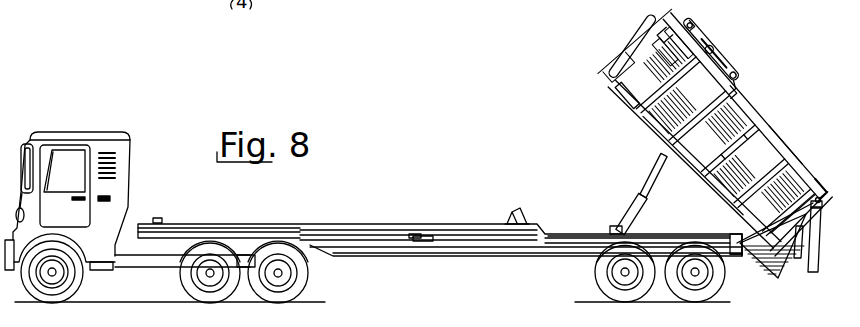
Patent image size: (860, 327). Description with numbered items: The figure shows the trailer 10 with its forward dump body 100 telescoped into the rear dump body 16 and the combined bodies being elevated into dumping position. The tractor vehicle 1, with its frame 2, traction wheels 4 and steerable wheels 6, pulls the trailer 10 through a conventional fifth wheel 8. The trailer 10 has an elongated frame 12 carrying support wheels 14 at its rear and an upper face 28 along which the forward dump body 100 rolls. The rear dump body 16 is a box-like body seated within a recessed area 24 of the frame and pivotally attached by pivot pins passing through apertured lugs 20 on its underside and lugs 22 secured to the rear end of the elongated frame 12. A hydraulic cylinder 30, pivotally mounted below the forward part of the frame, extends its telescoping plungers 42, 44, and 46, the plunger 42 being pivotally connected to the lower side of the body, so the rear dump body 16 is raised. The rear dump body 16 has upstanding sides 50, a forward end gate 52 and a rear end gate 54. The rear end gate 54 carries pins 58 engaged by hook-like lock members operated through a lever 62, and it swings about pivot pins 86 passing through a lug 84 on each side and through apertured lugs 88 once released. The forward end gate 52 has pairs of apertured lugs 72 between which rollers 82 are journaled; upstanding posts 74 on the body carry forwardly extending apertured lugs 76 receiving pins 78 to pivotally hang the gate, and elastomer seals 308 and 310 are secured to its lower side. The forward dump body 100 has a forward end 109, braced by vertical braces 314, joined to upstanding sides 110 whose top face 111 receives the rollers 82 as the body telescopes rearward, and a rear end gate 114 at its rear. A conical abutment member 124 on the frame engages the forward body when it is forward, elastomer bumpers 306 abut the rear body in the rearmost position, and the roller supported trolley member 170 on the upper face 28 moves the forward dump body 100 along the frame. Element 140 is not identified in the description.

The tractor vehicle 1 is at (133, 173).
The frame 2 is at (142, 267).
The traction wheels 4 is at (270, 295).
The steerable wheels 6 is at (76, 284).
The fifth wheel 8 is at (166, 257).
The trailer 10 is at (381, 257).
The elongated frame 12 is at (480, 251).
The support wheels 14 is at (695, 300).
The rear dump body 16 is at (760, 144).
The apertured lugs 20 is at (738, 233).
The lugs 22 is at (742, 247).
The recessed area 24 is at (567, 234).
The upper face 28 is at (458, 226).
The hydraulic cylinder 30 is at (615, 232).
The telescoping plunger 42 is at (670, 153).
The telescoping plunger 44 is at (648, 186).
The telescoping plunger 46 is at (631, 211).
The upstanding sides 50 is at (708, 124).
The forward end gate 52 is at (717, 79).
The rear end gate 54 is at (823, 263).
The pins 58 is at (817, 269).
The lever 62 is at (628, 106).
The apertured lugs 72 is at (713, 51).
The upstanding posts 74 is at (670, 33).
The apertured lug 76 is at (683, 34).
The pin 78 is at (677, 23).
The rollers 82 is at (692, 54).
The lug 84 is at (817, 200).
The pivot pins 86 is at (820, 186).
The apertured lugs 88 is at (805, 195).
The forward dump body 100 is at (606, 60).
The forward end 109 is at (642, 40).
The upstanding sides 110 is at (628, 43).
The top face 111 is at (773, 149).
The rear end gate 114 is at (803, 221).
The conical abutment member 124 is at (162, 222).
The guide bracket 140 is at (415, 234).
The roller supported trolley member 170 is at (517, 212).
The elastomer bumpers 306 is at (618, 78).
The elastomer seal 308 is at (725, 81).
The elastomer seal 310 is at (722, 94).
The vertical braces 314 is at (618, 44).